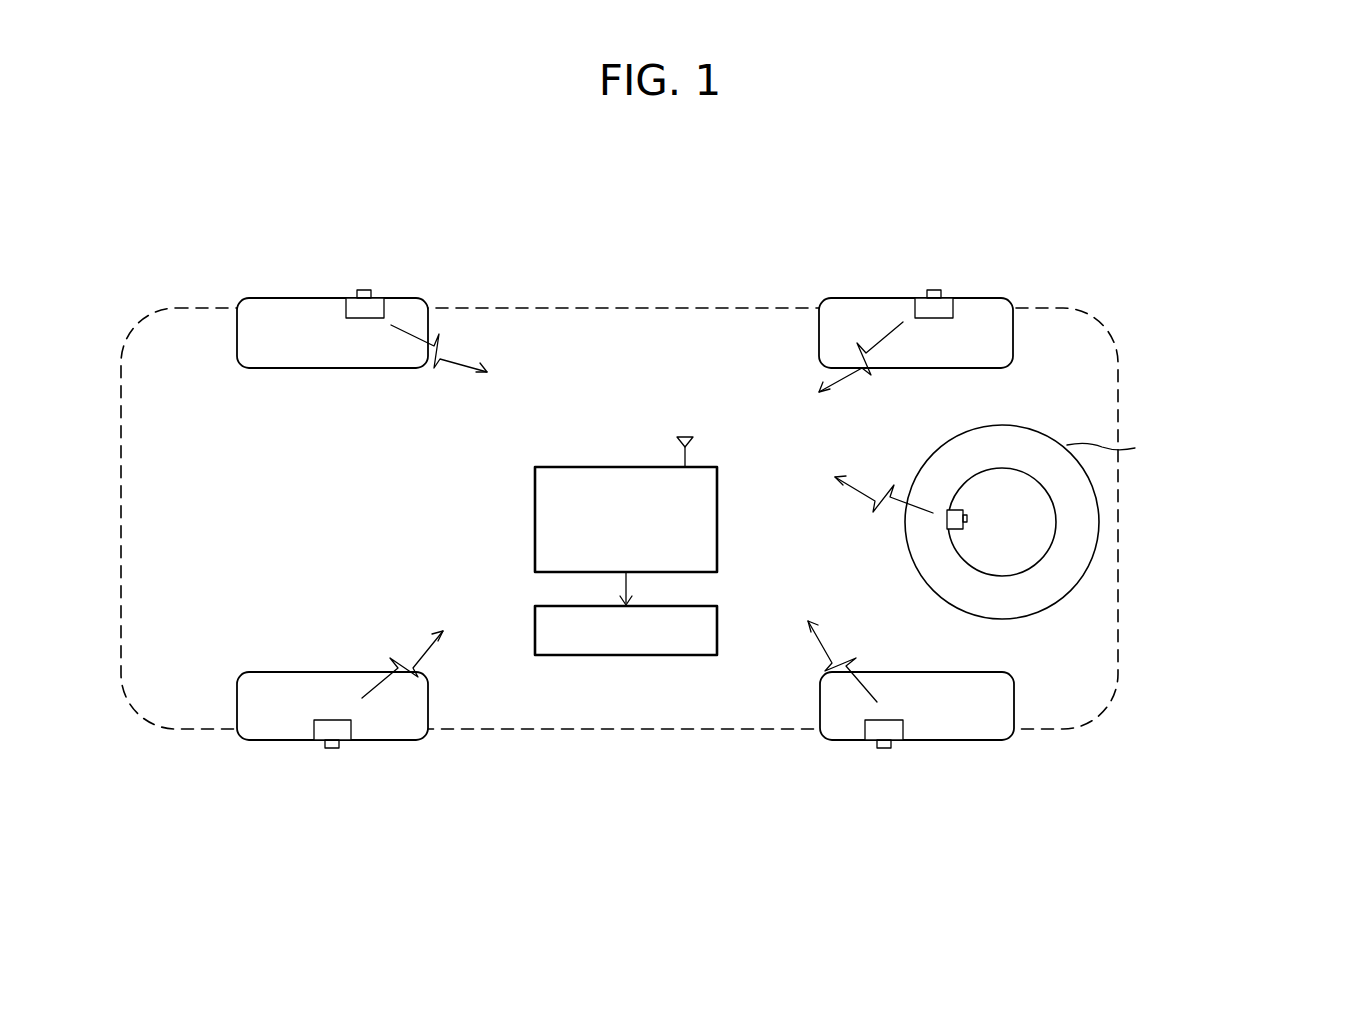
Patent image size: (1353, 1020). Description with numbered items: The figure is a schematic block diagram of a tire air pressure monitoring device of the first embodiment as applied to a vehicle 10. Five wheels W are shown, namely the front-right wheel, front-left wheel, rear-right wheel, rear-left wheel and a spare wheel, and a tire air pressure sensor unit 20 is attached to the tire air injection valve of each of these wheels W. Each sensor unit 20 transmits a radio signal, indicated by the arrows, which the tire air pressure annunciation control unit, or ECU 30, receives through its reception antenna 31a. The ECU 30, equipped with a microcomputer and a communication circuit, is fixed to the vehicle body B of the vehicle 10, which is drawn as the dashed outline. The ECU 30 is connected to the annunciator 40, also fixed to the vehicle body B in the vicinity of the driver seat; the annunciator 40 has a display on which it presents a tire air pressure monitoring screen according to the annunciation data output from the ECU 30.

The vehicle 10 is at (681, 237).
The tire air pressure sensor unit 20 is at (384, 298).
The tire air pressure annunciation control unit (ECU) 30 is at (573, 467).
The reception antenna 31a is at (695, 452).
The annunciator 40 is at (660, 656).
The wheel W is at (263, 298).
The vehicle body B is at (1118, 522).